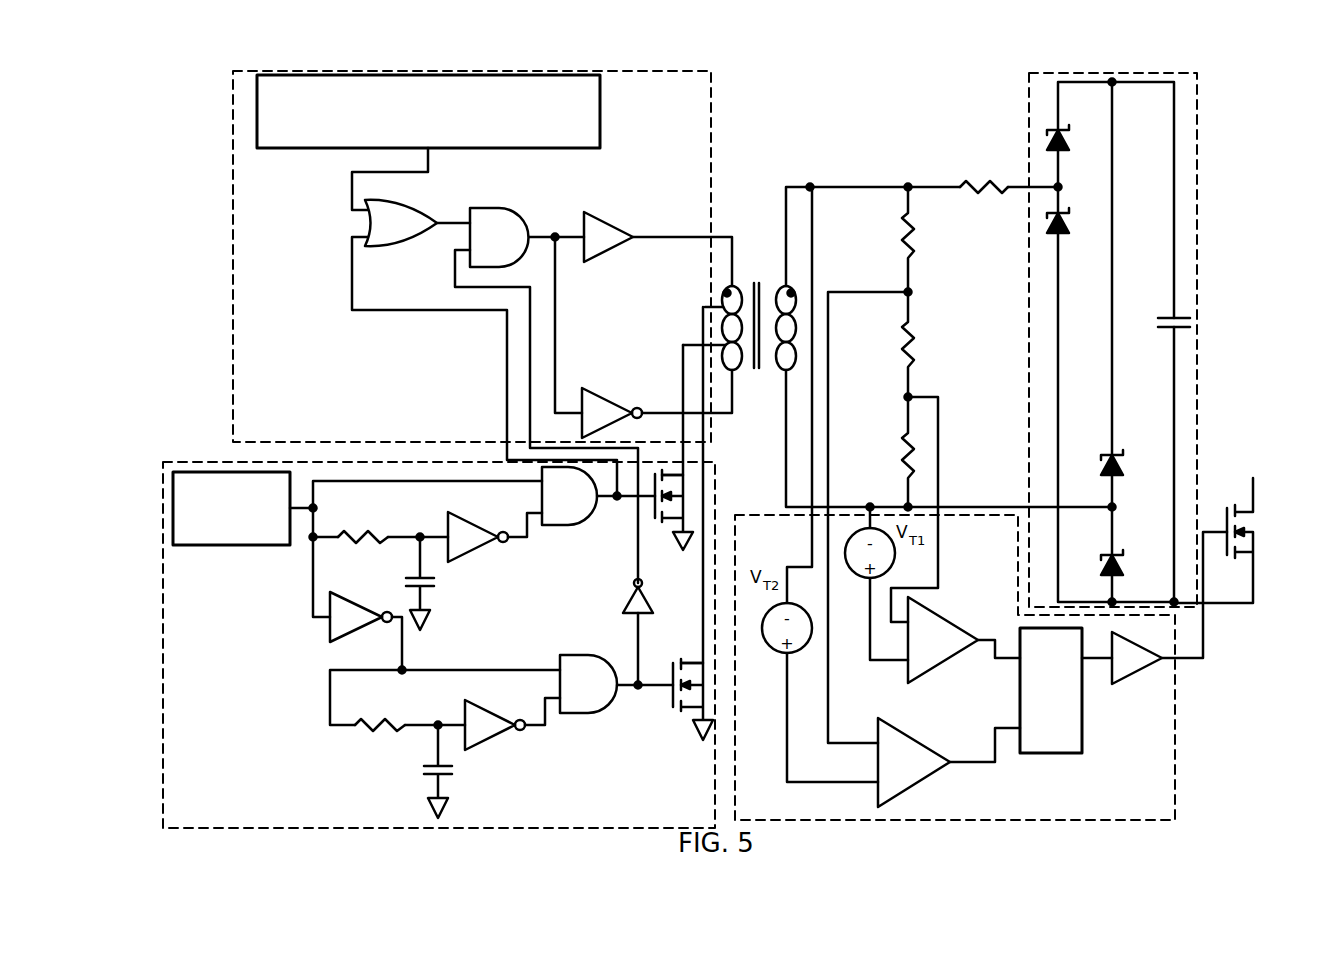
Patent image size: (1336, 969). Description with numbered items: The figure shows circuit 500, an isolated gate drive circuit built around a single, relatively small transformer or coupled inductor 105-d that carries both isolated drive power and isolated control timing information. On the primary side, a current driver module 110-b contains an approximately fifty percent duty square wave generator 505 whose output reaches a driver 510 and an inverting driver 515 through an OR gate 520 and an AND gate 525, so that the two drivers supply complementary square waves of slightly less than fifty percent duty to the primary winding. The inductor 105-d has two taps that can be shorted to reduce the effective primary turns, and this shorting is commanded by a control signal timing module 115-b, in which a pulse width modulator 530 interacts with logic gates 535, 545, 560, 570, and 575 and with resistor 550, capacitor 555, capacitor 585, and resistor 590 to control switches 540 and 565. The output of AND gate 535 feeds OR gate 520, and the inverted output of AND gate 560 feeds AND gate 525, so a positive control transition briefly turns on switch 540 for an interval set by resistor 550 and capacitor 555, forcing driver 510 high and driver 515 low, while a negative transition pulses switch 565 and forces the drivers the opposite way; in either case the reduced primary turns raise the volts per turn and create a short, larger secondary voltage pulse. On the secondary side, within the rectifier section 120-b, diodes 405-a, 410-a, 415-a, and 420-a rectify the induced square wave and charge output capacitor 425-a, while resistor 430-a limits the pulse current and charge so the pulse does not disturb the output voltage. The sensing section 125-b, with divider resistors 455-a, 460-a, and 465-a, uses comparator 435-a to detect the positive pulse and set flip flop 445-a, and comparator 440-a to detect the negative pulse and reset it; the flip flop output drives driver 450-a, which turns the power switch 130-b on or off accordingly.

The coupled inductor 105-d is at (782, 278).
The current driver module 110-b is at (233, 212).
The control signal timing module 115-b is at (215, 462).
The rectifier and output module 120-b is at (1198, 263).
The control signal detection module 125-b is at (757, 515).
The power switch 130-b is at (1258, 492).
The diode 405-a is at (1068, 136).
The diode 410-a is at (1070, 219).
The diode 415-a is at (1122, 456).
The diode 420-a is at (1122, 561).
The output capacitor 425-a is at (1172, 318).
The resistor 430-a is at (978, 182).
The comparator 435-a is at (952, 621).
The comparator 440-a is at (918, 746).
The flip flop 445-a is at (1082, 746).
The driver 450-a is at (1142, 684).
The resistor 455-a is at (912, 242).
The resistor 460-a is at (912, 333).
The resistor 465-a is at (893, 466).
The circuit 500 is at (1222, 796).
The square wave generator 505 is at (288, 150).
The driver 510 is at (608, 220).
The inverting driver 515 is at (600, 397).
The OR gate 520 is at (420, 206).
The AND gate 525 is at (500, 208).
The pulse width modulator 530 is at (276, 548).
The AND gate 535 is at (566, 528).
The switch 540 is at (660, 522).
The logic gate 545 is at (476, 556).
The resistor 550 is at (378, 537).
The capacitor 555 is at (438, 592).
The AND gate 560 is at (576, 655).
The switch 565 is at (672, 712).
The logic gate 570 is at (362, 600).
The logic gate 575 is at (481, 750).
The capacitor 585 is at (454, 786).
The resistor 590 is at (400, 725).